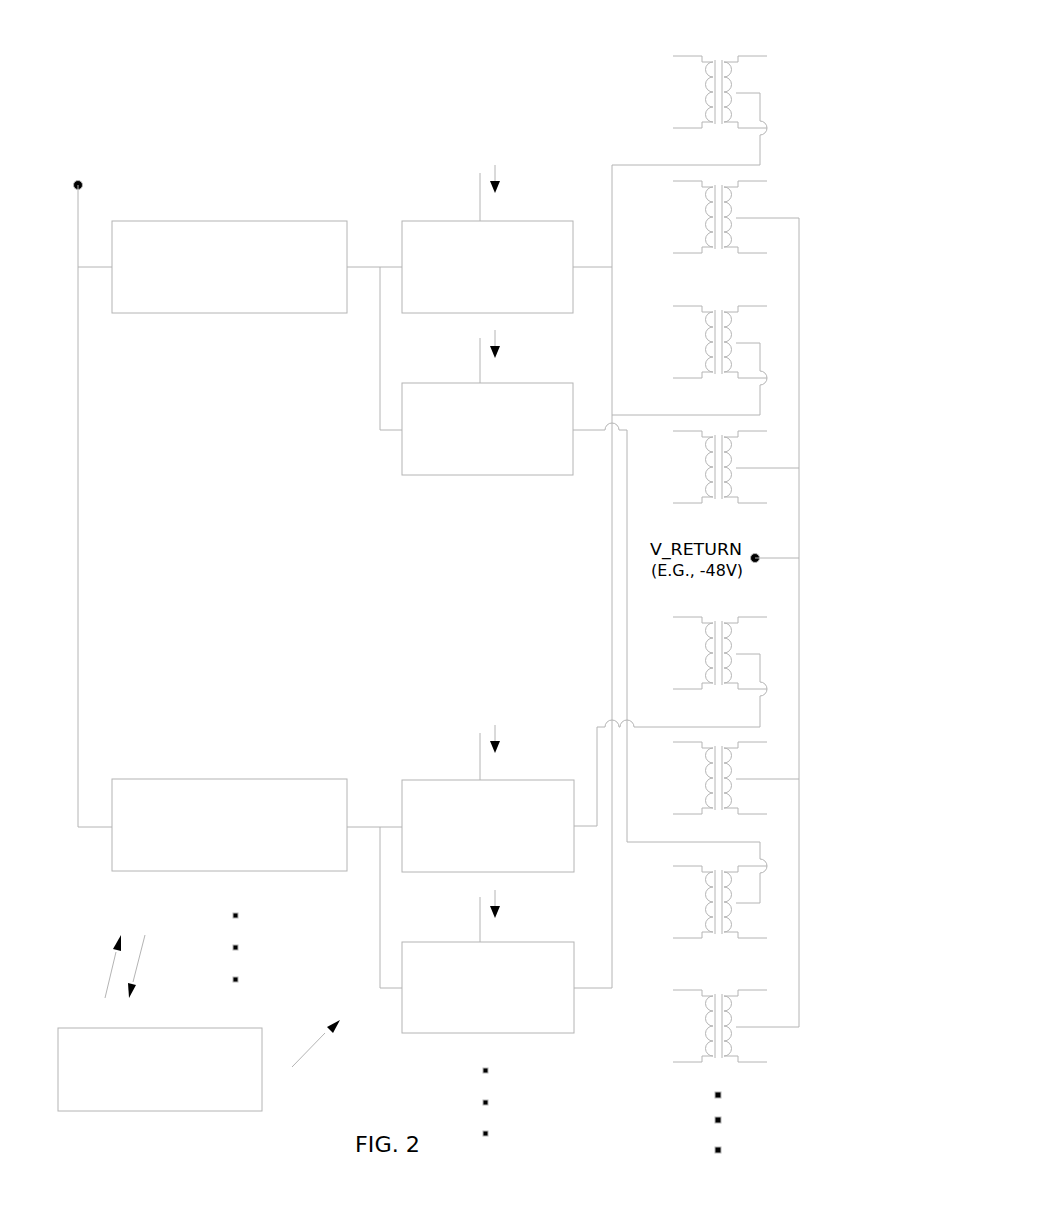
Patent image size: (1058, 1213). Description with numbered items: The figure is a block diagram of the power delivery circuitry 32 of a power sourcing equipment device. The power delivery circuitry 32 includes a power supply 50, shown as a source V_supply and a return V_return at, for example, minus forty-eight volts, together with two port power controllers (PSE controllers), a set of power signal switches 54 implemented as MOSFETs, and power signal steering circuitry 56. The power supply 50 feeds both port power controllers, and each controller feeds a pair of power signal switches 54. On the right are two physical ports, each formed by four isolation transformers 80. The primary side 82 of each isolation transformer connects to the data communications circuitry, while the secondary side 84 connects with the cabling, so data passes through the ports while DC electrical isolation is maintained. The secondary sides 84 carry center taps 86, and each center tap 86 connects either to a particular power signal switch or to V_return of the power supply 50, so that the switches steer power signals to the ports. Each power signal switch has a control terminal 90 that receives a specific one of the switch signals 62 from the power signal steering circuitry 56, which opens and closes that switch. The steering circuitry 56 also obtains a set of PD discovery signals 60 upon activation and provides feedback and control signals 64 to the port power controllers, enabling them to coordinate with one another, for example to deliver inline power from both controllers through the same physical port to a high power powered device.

The power delivery circuitry 32 is at (165, 73).
The power supply 50 is at (63, 104).
The power signal switches 54 is at (358, 103).
The power signal steering circuitry 56 is at (220, 1098).
The PD discovery signals 60 is at (108, 980).
The switch signals 62 is at (317, 1040).
The feedback and control signals 64 is at (137, 962).
The isolation transformers 80 is at (560, 140).
The primary side 82 is at (641, 52).
The secondary side 84 is at (796, 50).
The center tap 86 is at (781, 92).
The control terminal 90 is at (436, 142).